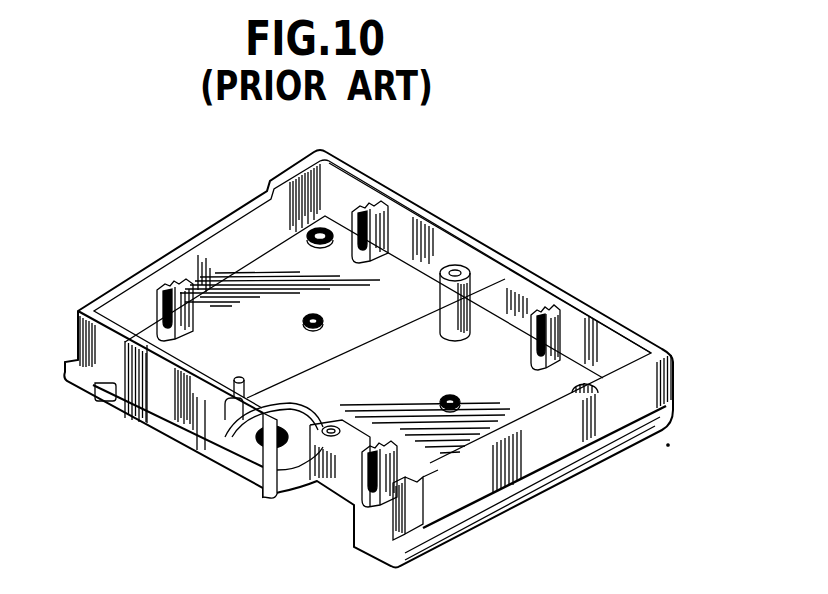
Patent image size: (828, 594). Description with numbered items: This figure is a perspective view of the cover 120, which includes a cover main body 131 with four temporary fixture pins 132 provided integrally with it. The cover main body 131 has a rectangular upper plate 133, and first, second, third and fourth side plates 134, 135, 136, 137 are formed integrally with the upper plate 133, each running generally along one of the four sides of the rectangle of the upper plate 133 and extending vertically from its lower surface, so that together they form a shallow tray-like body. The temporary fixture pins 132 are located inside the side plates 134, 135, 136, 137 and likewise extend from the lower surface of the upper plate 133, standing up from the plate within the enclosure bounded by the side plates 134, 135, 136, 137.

The cover 120 is at (214, 216).
The cover main body 131 is at (518, 260).
The temporary fixture pin 132 is at (352, 248).
The upper plate 133 is at (395, 283).
The first side plate 134 is at (397, 226).
The second side plate 135 is at (505, 279).
The third side plate 136 is at (263, 228).
The fourth side plate 137 is at (603, 385).